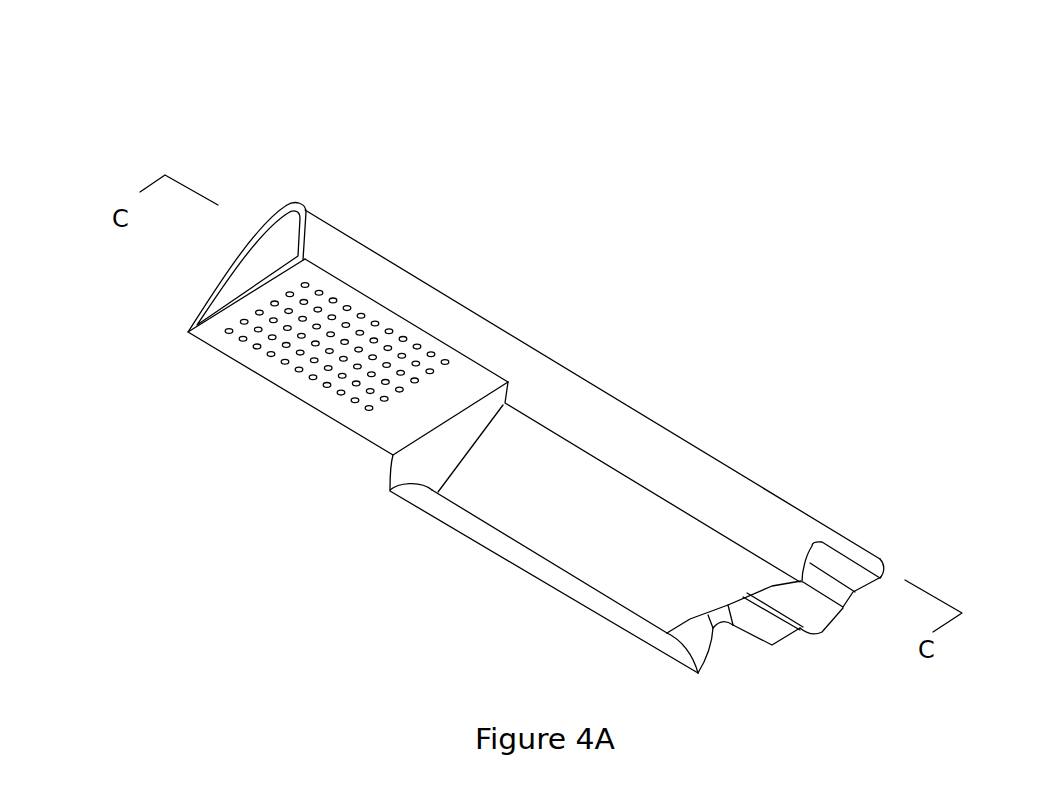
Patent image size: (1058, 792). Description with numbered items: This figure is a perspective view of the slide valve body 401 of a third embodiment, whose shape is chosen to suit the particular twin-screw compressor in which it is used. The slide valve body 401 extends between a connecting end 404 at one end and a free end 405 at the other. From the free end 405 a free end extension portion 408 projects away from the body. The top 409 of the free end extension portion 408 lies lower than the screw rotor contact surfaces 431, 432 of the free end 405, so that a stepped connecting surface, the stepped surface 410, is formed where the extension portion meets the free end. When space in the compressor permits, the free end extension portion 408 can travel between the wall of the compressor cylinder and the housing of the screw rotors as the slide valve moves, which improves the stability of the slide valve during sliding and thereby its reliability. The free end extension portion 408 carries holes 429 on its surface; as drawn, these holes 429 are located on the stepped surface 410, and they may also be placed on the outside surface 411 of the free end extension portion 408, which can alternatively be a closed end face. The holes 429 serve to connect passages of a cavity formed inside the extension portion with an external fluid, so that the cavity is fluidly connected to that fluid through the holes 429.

The slide valve body 401 is at (775, 325).
The connecting end 404 is at (805, 511).
The free end 405 is at (652, 408).
The free end extension portion 408 is at (592, 338).
The top of the free end extension portion 409 is at (406, 241).
The stepped surface 410 is at (385, 423).
The outside surface 411 is at (238, 273).
The holes 429 is at (272, 372).
The screw rotor contact surface 431 is at (603, 505).
The screw rotor contact surface 432 is at (467, 527).